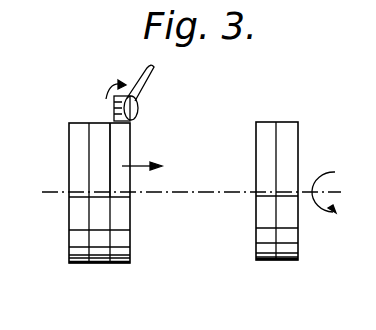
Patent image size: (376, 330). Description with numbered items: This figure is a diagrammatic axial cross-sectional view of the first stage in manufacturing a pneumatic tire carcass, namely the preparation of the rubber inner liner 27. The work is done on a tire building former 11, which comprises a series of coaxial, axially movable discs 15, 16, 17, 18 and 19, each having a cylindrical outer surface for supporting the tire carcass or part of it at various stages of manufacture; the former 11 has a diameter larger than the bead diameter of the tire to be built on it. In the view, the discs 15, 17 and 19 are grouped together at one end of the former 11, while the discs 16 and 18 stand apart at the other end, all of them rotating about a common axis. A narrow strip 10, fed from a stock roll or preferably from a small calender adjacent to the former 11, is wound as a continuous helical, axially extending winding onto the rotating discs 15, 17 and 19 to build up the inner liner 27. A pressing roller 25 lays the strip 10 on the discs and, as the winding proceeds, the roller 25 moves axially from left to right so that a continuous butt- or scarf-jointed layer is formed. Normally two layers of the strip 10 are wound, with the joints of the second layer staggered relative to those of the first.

The narrow strip 10 is at (152, 72).
The tire building former 11 is at (222, 110).
The disc 15 is at (78, 217).
The disc 16 is at (288, 237).
The disc 17 is at (100, 218).
The disc 18 is at (264, 212).
The disc 19 is at (122, 155).
The pressing roller 25 is at (110, 100).
The rubber inner liner 27 is at (92, 263).